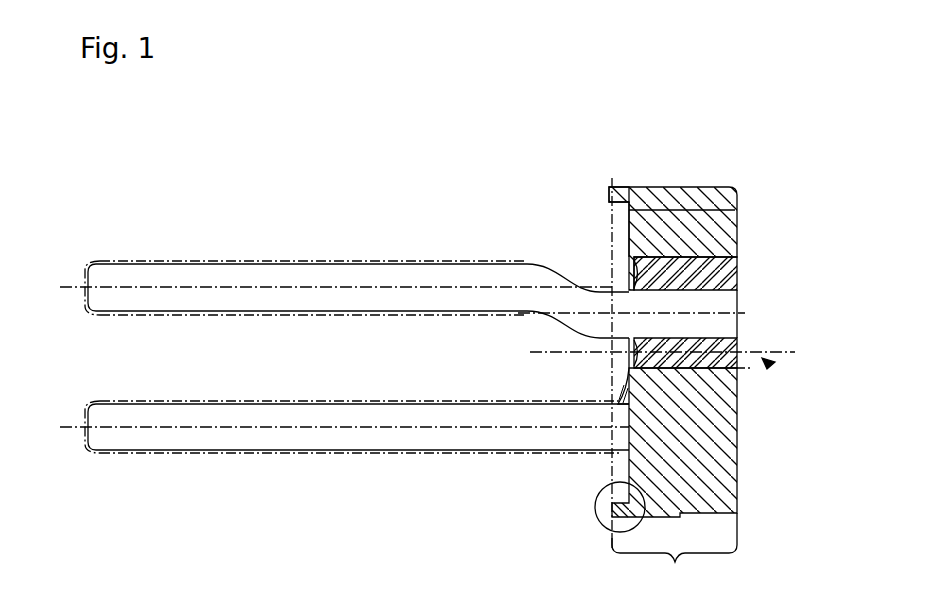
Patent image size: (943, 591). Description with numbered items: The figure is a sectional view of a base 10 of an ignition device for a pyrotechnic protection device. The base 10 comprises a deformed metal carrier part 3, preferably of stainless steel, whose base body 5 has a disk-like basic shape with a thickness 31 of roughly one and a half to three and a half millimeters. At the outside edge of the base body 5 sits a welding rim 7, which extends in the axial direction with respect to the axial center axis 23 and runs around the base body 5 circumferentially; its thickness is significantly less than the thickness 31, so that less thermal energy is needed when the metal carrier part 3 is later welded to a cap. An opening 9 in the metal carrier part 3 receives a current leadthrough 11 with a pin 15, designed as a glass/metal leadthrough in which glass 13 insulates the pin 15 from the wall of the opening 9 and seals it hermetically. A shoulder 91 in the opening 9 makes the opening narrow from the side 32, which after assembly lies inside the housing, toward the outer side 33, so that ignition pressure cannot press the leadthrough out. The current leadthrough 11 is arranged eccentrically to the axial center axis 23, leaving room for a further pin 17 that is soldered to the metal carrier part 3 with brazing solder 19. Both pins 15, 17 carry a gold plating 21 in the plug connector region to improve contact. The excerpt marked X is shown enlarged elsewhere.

The base 10 is at (454, 110).
The metal carrier part 3 is at (673, 187).
The base body 5 is at (657, 233).
The welding rim 7 is at (612, 187).
The opening 9 is at (737, 260).
The current leadthrough 11 is at (770, 364).
The glass 13 is at (665, 280).
The pin 15 is at (451, 263).
The further pin 17 is at (317, 440).
The brazing solder 19 is at (620, 396).
The gold plating 21 is at (262, 263).
The axial center axis 23 is at (765, 352).
The thickness 31 is at (674, 552).
The side 32 is at (738, 462).
The outer side 33 is at (623, 225).
The shoulder 91 is at (690, 256).
The excerpt X is at (596, 501).